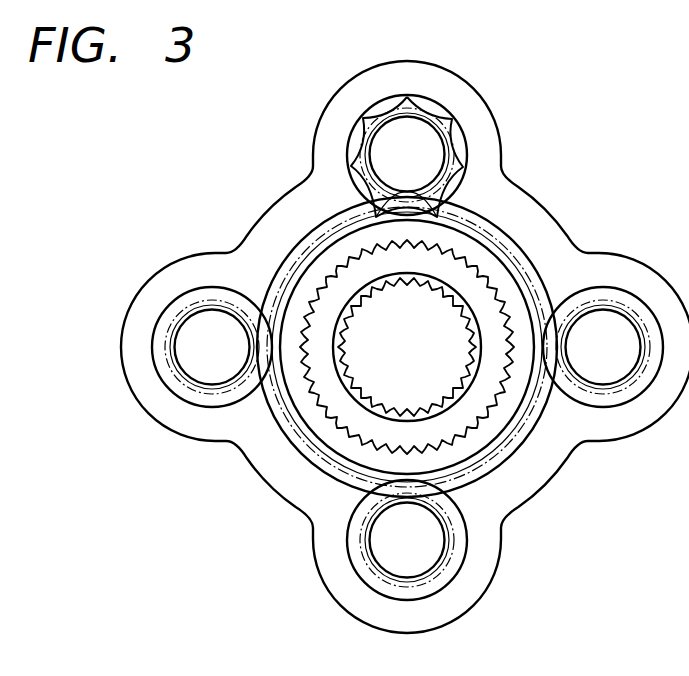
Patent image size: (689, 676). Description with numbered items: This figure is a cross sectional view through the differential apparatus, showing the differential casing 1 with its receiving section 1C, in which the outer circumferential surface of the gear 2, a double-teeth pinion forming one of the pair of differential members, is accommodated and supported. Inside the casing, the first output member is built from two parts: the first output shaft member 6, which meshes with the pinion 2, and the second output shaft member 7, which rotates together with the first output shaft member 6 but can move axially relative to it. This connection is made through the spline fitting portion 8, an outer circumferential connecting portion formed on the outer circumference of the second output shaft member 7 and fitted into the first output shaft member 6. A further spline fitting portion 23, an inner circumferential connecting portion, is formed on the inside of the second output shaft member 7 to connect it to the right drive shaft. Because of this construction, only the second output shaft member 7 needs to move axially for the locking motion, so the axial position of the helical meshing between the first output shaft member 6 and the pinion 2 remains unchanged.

The differential casing 1 is at (453, 88).
The receiving section 1C is at (397, 98).
The gear 2 is at (422, 138).
The first output shaft member 6 is at (482, 253).
The second output shaft member 7 is at (480, 294).
The spline fitting portion 8 is at (505, 402).
The spline fitting portion 23 is at (457, 381).